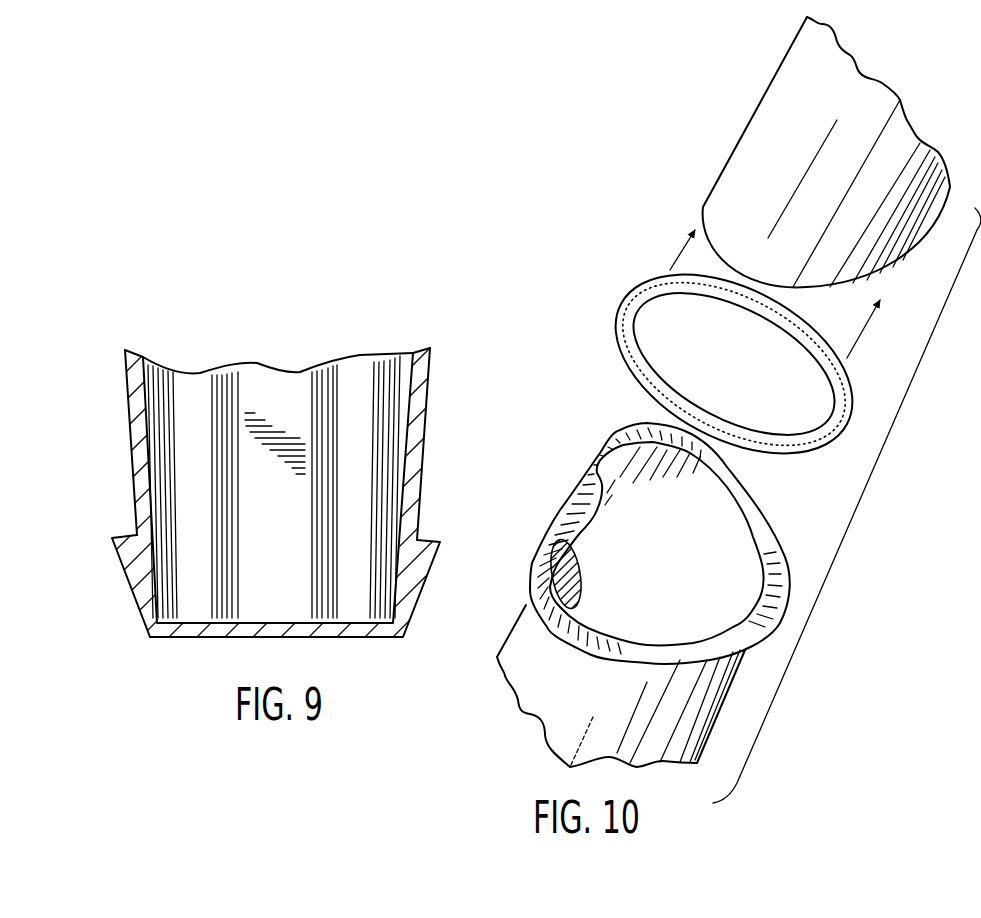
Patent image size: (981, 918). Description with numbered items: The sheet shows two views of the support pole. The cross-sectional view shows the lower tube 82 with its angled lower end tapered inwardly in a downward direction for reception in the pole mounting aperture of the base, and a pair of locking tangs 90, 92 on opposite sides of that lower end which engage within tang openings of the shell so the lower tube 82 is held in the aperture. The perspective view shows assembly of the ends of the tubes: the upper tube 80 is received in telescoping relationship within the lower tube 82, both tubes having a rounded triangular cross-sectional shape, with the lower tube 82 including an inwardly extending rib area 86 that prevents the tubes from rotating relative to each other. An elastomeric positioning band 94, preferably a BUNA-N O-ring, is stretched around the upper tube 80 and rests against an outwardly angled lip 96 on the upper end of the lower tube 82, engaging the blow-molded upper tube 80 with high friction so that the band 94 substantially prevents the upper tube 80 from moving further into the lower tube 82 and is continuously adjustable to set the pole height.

In FIG. 10, the upper tube 80 is at (738, 135).
In FIG. 9, the lower tube 82 is at (125, 398).
In FIG. 10, the lower tube 82 is at (713, 723).
In FIG. 10, the inwardly extending rib area 86 is at (567, 567).
In FIG. 9, the locking tang 90 is at (127, 558).
In FIG. 9, the locking tang 92 is at (433, 541).
In FIG. 10, the positioning band 94 is at (620, 305).
In FIG. 10, the outwardly angled lip 96 is at (780, 583).